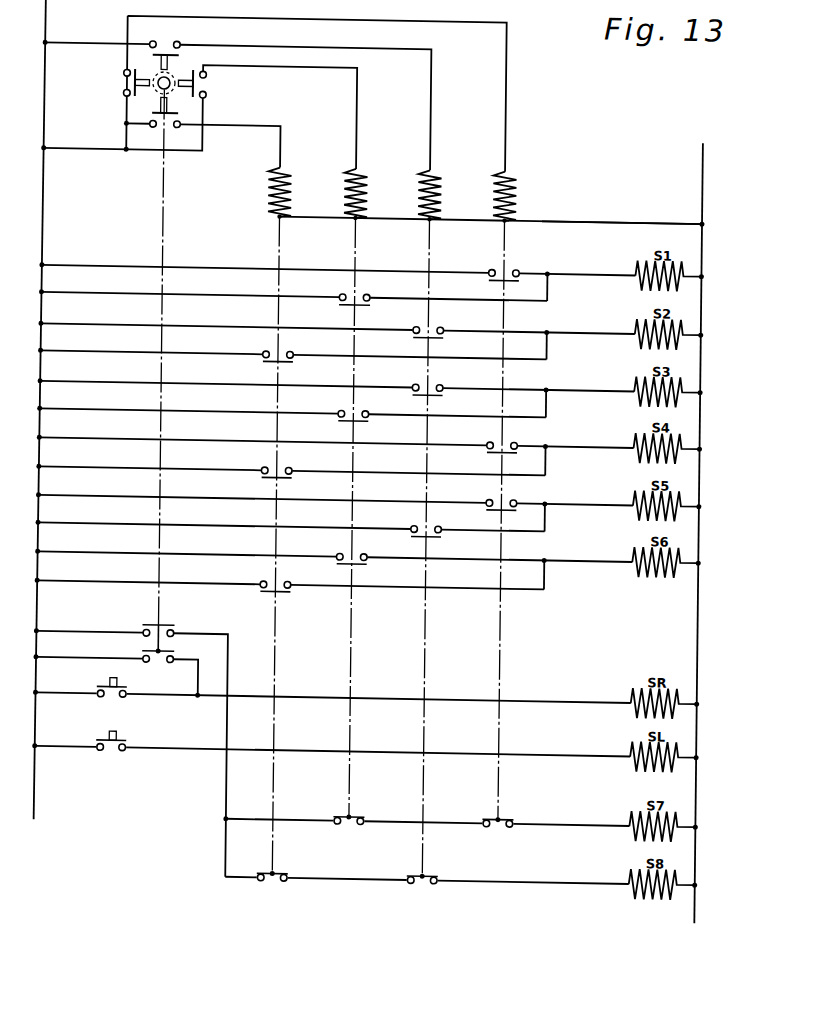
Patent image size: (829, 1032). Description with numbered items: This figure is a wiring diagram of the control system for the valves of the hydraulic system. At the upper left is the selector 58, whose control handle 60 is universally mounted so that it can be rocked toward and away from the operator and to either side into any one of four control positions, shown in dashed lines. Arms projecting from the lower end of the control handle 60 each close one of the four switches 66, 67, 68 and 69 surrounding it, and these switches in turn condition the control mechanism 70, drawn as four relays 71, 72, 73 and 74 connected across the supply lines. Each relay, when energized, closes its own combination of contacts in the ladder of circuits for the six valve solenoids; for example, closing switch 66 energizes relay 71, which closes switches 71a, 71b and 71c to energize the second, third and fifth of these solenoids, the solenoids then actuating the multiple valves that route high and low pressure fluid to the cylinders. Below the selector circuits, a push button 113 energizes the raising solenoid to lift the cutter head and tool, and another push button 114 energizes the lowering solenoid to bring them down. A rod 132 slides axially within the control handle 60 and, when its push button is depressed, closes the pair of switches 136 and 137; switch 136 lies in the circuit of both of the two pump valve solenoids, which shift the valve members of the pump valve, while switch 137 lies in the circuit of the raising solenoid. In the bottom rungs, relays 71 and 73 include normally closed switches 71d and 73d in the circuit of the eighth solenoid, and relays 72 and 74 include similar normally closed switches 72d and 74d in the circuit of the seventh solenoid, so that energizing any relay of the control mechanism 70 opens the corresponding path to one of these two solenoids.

The selector 58 is at (110, 47).
The control handle 60 is at (162, 85).
The switch 66 is at (179, 51).
The switch 67 is at (119, 83).
The switch 68 is at (167, 124).
The switch 69 is at (205, 90).
The rod 132 is at (164, 222).
The control mechanism 70 is at (551, 186).
The relay 71 is at (431, 176).
The relay 72 is at (505, 174).
The relay 73 is at (281, 175).
The relay 74 is at (357, 174).
The switch 71a is at (433, 323).
The switch 71b is at (434, 381).
The switch 71c is at (435, 525).
The normally closed switch 71d is at (431, 885).
The normally closed switch 72d is at (507, 827).
The normally closed switch 73d is at (279, 885).
The normally closed switch 74d is at (357, 827).
The switch 136 is at (186, 629).
The switch 137 is at (178, 657).
The push button 113 is at (132, 694).
The push button 114 is at (132, 747).